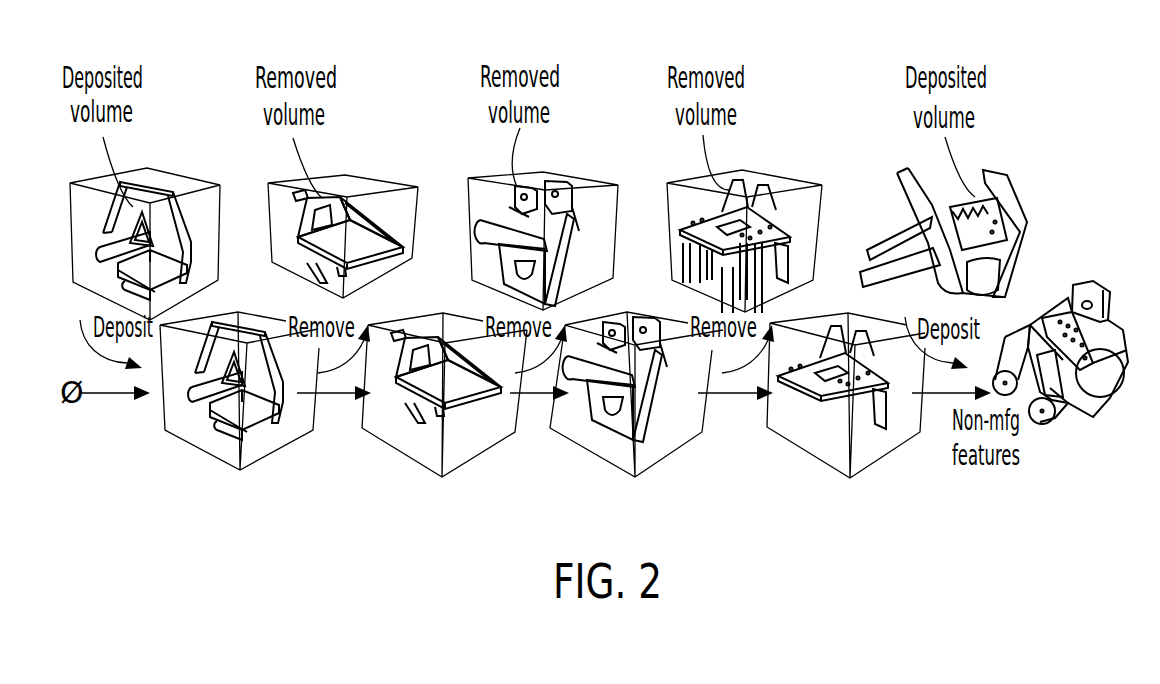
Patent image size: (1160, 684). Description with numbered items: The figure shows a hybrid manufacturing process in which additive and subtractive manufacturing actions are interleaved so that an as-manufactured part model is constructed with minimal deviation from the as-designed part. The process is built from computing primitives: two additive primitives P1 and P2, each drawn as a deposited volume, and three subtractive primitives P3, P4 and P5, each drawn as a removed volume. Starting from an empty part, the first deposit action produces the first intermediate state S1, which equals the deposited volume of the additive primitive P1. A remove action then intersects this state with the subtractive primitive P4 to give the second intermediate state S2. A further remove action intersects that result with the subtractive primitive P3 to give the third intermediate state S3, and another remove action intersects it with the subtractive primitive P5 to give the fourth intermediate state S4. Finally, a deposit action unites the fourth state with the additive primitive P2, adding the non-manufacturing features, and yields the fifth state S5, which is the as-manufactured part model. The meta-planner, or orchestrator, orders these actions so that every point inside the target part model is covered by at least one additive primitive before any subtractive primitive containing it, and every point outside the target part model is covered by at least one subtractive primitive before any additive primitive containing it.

The additive primitive P1 is at (165, 205).
The additive primitive P2 is at (1010, 217).
The subtractive primitive P3 is at (493, 273).
The subtractive primitive P4 is at (392, 207).
The subtractive primitive P5 is at (792, 207).
The intermediate part state S1 is at (239, 391).
The intermediate part state S2 is at (444, 395).
The intermediate part state S3 is at (636, 394).
The intermediate part state S4 is at (846, 395).
The as-manufactured part model S5 is at (1062, 370).